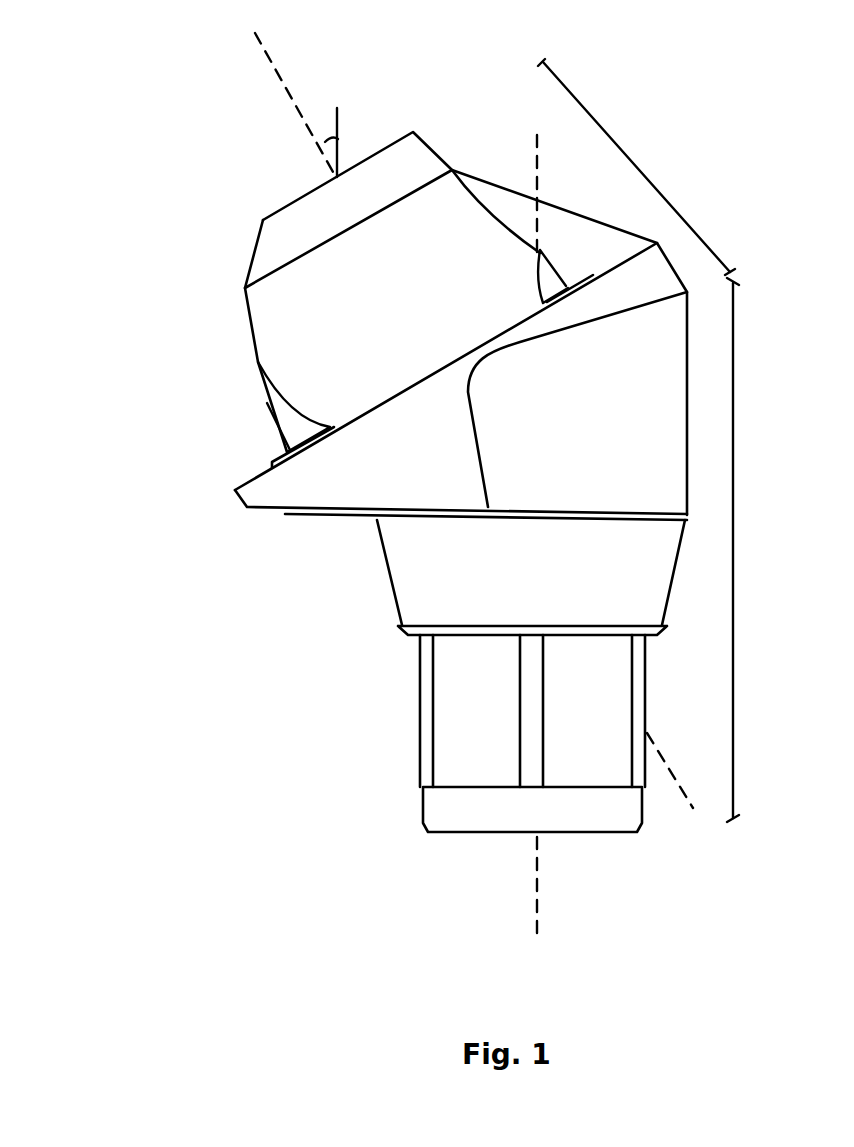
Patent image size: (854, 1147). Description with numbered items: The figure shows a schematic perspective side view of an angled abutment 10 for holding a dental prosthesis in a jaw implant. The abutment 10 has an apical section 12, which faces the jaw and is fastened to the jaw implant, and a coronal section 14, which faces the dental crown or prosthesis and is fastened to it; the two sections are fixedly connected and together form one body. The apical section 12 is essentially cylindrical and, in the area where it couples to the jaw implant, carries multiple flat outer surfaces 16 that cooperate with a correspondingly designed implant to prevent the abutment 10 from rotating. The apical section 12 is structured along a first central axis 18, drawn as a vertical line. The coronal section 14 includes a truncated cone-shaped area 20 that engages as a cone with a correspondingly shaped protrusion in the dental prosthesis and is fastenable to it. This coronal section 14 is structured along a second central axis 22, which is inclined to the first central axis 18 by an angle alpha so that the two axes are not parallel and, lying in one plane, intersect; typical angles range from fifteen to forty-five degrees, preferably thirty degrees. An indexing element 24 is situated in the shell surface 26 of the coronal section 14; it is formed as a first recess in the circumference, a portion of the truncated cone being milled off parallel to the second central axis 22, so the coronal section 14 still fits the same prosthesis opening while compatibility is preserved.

The abutment 10 is at (162, 140).
The apical section 12 is at (733, 554).
The coronal section 14 is at (637, 167).
The flat outer surfaces 16 is at (472, 723).
The first central axis 18 is at (537, 168).
The truncated cone-shaped area 20 is at (252, 343).
The second central axis 22 is at (293, 102).
The indexing element 24 is at (257, 388).
The shell surface 26 is at (451, 253).